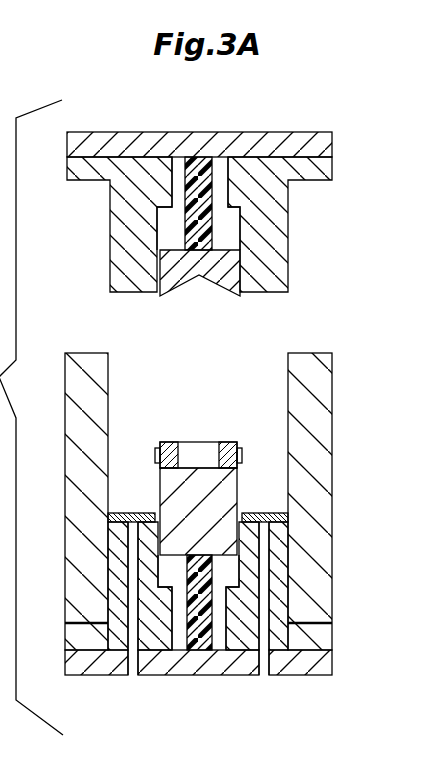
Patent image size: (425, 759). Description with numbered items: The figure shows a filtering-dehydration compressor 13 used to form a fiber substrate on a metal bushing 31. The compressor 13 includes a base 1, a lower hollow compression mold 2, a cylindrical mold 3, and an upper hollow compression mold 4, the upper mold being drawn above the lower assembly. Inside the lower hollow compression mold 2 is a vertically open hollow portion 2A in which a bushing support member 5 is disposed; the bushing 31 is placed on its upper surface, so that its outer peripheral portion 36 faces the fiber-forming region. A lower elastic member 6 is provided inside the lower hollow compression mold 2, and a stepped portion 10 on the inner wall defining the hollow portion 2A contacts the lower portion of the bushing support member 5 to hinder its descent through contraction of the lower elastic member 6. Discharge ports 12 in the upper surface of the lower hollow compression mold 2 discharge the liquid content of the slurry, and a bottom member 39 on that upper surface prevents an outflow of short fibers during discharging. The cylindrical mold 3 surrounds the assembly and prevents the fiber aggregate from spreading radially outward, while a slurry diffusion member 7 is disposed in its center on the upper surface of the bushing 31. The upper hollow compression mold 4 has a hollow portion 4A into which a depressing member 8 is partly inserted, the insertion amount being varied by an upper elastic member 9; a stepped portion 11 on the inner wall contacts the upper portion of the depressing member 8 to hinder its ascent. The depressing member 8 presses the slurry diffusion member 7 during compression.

The base 1 is at (308, 655).
The lower hollow compression mold 2 is at (247, 632).
The hollow portion 2A is at (173, 568).
The cylindrical mold 3 is at (308, 578).
The upper hollow compression mold 4 is at (253, 170).
The hollow portion 4A is at (172, 220).
The bushing support member 5 is at (218, 490).
The lower elastic member 6 is at (198, 630).
The slurry diffusion member 7 is at (222, 536).
The depressing member 8 is at (217, 270).
The upper elastic member 9 is at (197, 165).
The stepped portion 10 is at (232, 578).
The stepped portion 11 is at (230, 218).
The discharge ports 12 is at (133, 677).
The filtering-dehydration compressor 13 is at (233, 191).
The bushing 31 is at (230, 440).
The outer peripheral portion 36 is at (222, 443).
The bottom member 39 is at (282, 513).